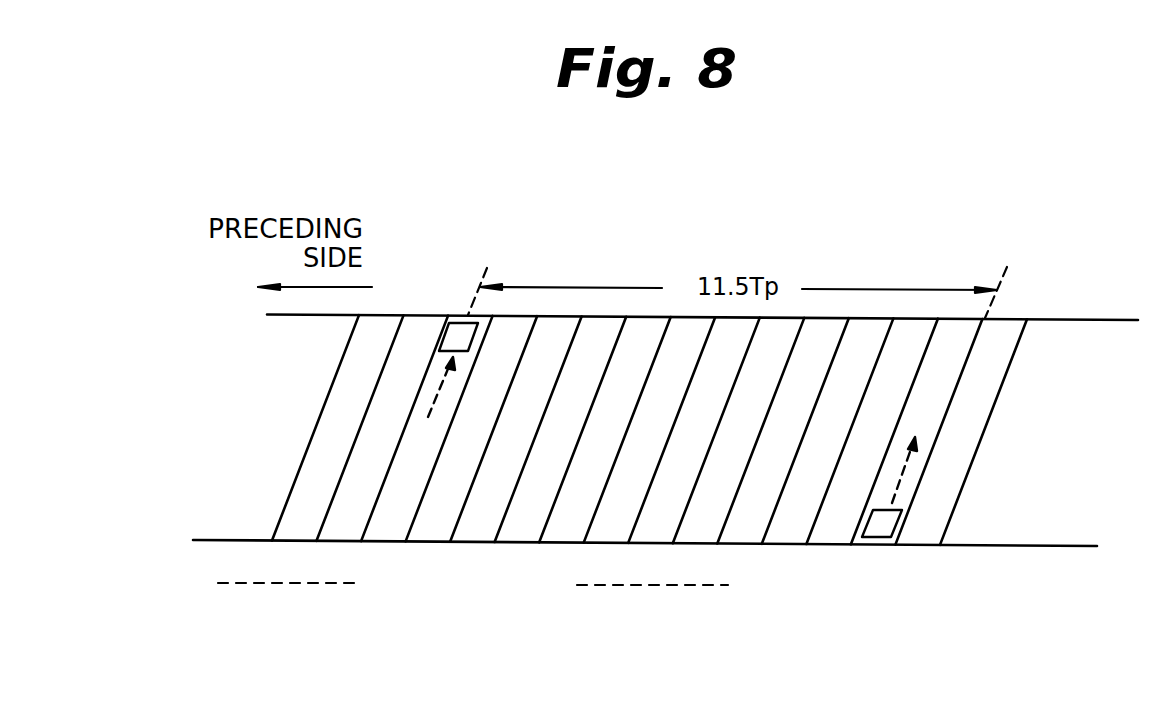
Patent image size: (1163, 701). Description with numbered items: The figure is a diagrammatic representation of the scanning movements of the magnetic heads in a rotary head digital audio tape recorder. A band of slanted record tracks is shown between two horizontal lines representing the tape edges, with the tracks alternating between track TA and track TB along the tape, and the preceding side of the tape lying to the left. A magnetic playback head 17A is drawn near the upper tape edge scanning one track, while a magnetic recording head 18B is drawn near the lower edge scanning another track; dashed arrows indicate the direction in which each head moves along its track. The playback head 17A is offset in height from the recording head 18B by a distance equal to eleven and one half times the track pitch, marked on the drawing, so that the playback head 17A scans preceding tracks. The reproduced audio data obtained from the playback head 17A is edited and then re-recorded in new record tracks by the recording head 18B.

The magnetic playback head 17A is at (458, 318).
The magnetic recording head 18B is at (880, 539).
The track A TA is at (385, 532).
The track B TB is at (432, 532).